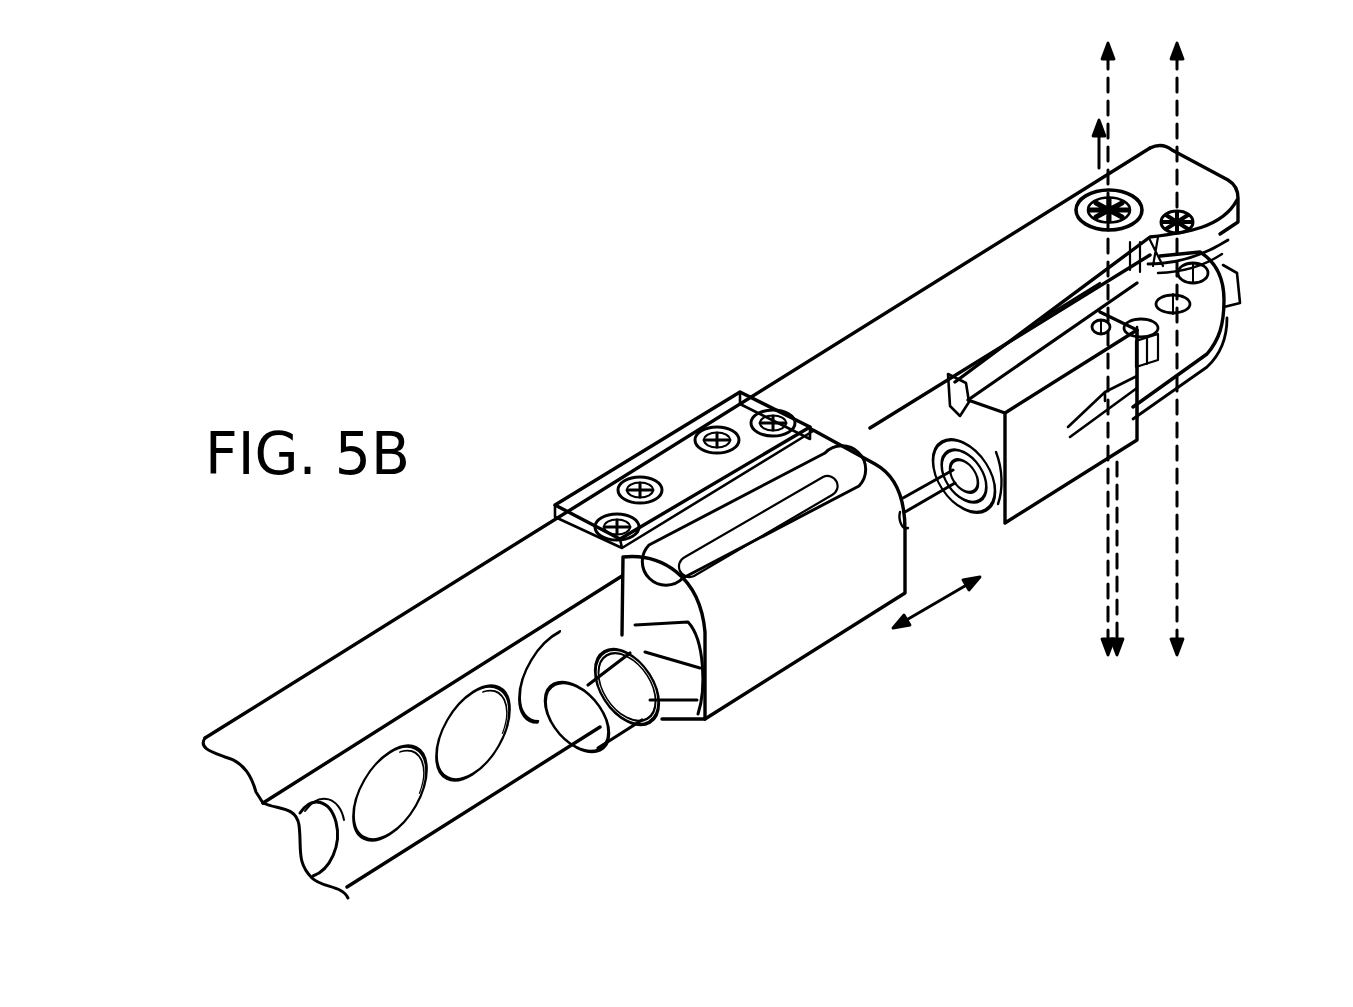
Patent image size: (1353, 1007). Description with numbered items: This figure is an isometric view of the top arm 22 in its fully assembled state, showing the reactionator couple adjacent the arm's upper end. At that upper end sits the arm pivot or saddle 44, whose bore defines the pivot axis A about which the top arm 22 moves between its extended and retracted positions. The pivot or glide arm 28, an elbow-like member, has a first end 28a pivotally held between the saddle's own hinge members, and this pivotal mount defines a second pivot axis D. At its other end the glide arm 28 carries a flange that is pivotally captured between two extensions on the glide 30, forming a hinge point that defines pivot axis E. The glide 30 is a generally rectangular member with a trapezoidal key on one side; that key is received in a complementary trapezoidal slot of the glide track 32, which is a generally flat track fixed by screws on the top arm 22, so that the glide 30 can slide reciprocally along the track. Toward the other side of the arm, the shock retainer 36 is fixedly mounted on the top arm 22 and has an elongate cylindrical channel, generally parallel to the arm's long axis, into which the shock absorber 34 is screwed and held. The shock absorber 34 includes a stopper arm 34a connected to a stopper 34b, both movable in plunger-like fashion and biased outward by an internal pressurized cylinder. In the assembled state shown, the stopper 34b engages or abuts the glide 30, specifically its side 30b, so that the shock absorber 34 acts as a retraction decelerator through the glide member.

The top arm 22 is at (286, 747).
The pivot or glide arm 28 is at (1213, 363).
The first end of glide arm 28a is at (1205, 252).
The glide 30 is at (1037, 460).
The side of glide 30b is at (954, 406).
The glide track 32 is at (1053, 313).
The shock absorber 34 is at (617, 750).
The stopper arm 34a is at (917, 500).
The stopper 34b is at (1008, 478).
The shock retainer 36 is at (820, 655).
The arm pivot or saddle 44 is at (1210, 158).
The pivot axis A is at (1103, 110).
The pivot axis E is at (1097, 167).
The pivot axis D is at (1178, 472).